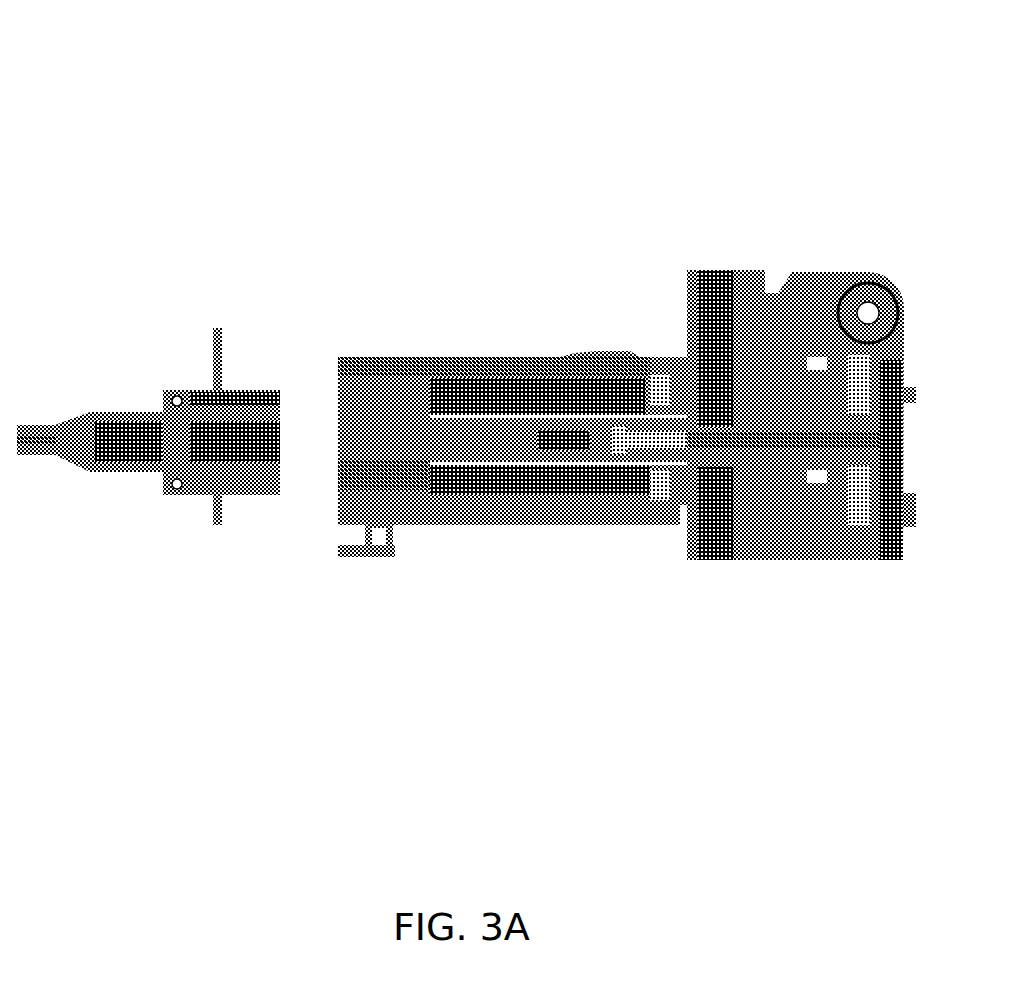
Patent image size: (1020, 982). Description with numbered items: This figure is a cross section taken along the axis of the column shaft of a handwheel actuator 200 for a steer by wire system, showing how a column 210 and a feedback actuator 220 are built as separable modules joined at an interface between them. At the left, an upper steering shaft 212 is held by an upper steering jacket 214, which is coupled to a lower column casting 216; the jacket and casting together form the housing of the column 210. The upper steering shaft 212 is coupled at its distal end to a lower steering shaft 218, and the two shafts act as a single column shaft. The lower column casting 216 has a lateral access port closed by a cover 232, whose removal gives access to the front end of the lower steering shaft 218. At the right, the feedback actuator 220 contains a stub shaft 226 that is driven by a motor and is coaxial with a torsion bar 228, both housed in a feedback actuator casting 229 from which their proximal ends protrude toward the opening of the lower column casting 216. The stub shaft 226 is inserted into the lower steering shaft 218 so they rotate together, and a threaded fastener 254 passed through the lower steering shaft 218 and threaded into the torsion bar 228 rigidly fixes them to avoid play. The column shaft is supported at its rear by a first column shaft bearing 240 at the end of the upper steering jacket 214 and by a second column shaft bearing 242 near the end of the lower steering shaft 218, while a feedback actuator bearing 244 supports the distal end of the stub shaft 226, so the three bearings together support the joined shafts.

The handwheel actuator 200 is at (461, 391).
The column 210 is at (443, 477).
The upper steering shaft 212 is at (90, 402).
The upper steering jacket 214 is at (337, 427).
The lower column casting 216 is at (519, 392).
The lower steering shaft 218 is at (562, 503).
The feedback actuator 220 is at (778, 499).
The stub shaft 226 is at (746, 469).
The torsion bar 228 is at (687, 395).
The feedback actuator casting 229 is at (880, 503).
The cover 232 is at (565, 339).
The first column shaft bearing 240 is at (141, 509).
The second column shaft bearing 242 is at (616, 487).
The feedback actuator bearing 244 is at (813, 521).
The threaded fastener 254 is at (672, 520).